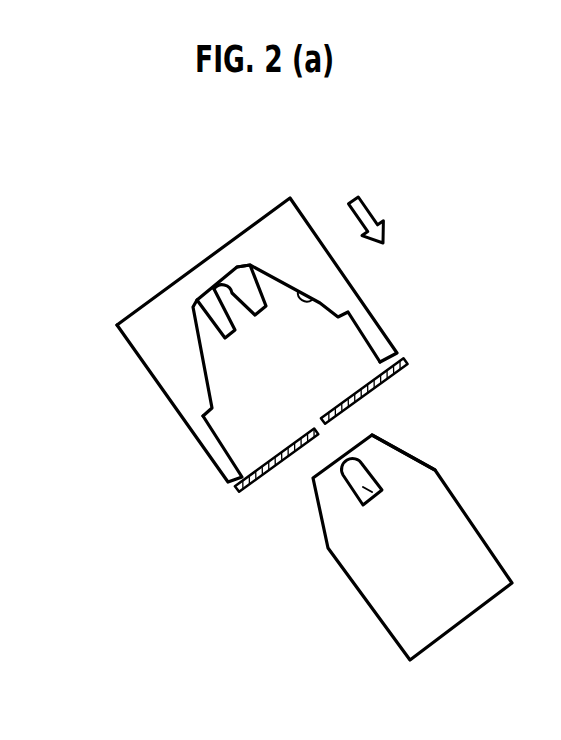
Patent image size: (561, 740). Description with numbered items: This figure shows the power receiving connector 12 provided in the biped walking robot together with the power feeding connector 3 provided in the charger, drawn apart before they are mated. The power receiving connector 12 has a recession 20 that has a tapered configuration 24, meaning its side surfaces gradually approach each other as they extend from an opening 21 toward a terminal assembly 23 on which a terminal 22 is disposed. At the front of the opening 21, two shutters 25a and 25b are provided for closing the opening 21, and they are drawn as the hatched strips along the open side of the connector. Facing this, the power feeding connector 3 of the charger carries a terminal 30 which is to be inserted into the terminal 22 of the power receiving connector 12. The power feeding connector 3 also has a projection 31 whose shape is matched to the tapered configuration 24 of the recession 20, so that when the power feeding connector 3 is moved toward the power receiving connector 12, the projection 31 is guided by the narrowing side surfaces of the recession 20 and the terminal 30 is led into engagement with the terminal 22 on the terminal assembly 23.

The power receiving connector 12 is at (253, 222).
The recession 20 is at (243, 370).
The opening 21 is at (270, 428).
The terminal 22 is at (229, 297).
The terminal assembly 23 is at (208, 303).
The tapered configuration 24 is at (320, 305).
The shutter 25a is at (383, 378).
The shutter 25b is at (263, 483).
The power feeding connector 3 is at (470, 620).
The terminal 30 is at (370, 500).
The projection 31 is at (407, 450).